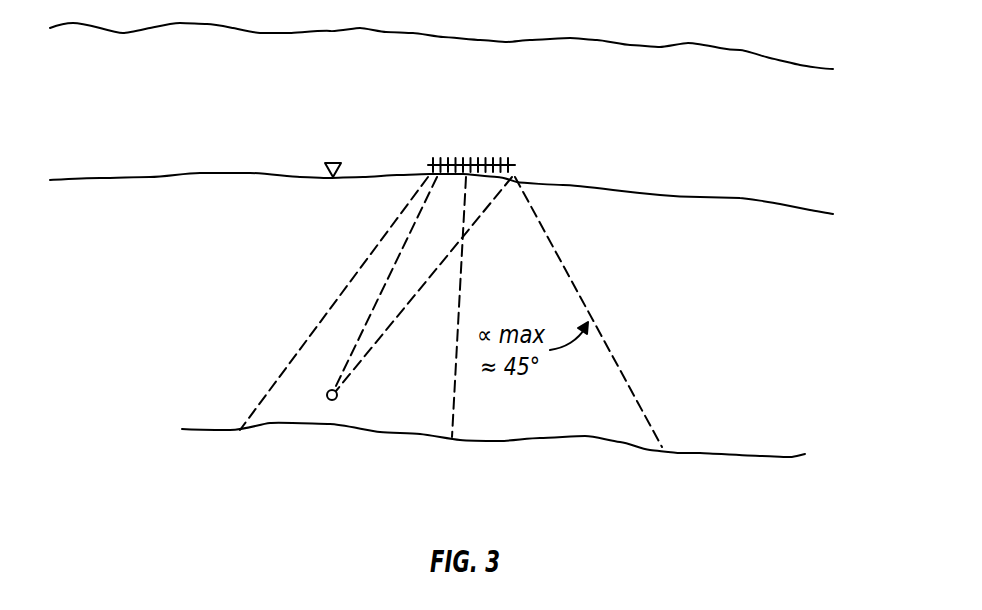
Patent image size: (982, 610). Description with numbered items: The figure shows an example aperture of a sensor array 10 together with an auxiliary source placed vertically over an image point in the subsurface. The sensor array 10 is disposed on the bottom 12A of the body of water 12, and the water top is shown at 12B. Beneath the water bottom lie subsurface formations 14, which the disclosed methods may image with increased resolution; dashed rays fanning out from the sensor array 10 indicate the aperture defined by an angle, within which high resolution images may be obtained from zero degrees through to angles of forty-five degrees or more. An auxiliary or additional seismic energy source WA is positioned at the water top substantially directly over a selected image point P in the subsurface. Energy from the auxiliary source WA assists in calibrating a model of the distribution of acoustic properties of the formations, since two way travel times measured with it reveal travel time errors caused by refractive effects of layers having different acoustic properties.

The sensor array 10 is at (475, 143).
The body of water 12 is at (163, 106).
The bottom of the body of water 12A is at (195, 167).
The water top 12B is at (443, 32).
The subsurface formations 14 is at (204, 431).
The auxiliary seismic energy source WA is at (334, 161).
The image point P is at (331, 401).